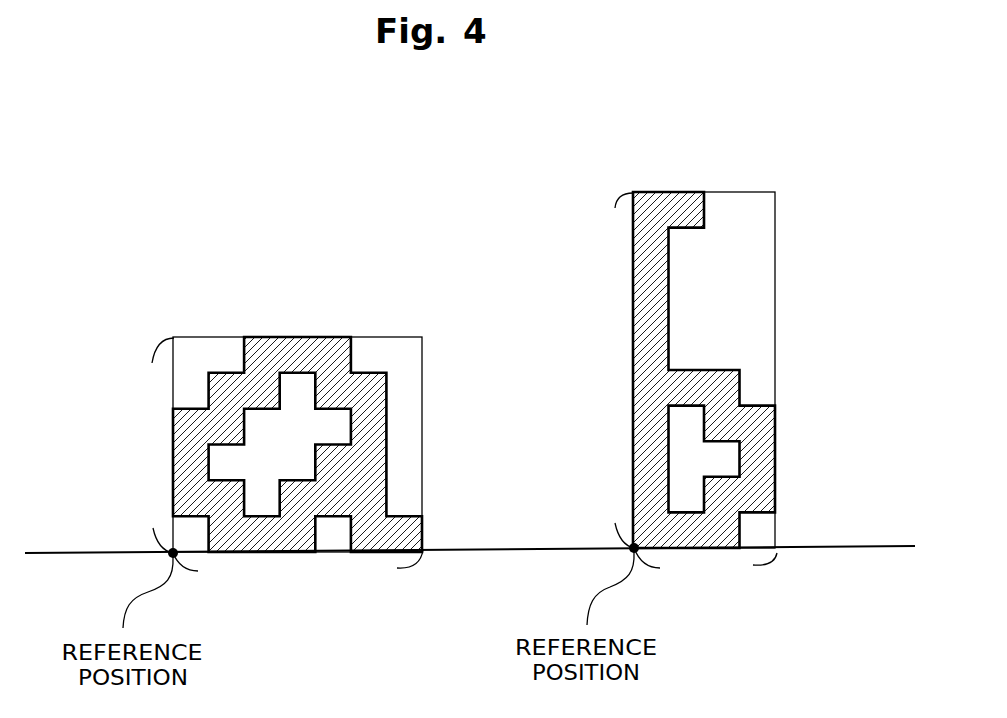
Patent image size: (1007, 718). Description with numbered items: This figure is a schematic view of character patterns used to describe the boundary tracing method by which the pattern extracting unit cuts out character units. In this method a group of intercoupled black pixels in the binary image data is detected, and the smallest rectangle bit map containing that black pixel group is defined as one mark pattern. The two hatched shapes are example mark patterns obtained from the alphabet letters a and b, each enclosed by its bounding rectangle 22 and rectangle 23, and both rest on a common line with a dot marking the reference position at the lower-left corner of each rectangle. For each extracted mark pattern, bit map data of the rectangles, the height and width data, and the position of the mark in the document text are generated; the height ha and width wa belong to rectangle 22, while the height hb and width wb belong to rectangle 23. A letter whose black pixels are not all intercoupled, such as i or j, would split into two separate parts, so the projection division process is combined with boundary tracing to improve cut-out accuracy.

The rectangle 22 is at (288, 320).
The rectangle 23 is at (687, 180).
The height of rectangle for letter a ha is at (154, 445).
The width of rectangle for letter a wa is at (298, 570).
The height of rectangle for letter b hb is at (613, 370).
The width of rectangle for letter b wb is at (705, 566).